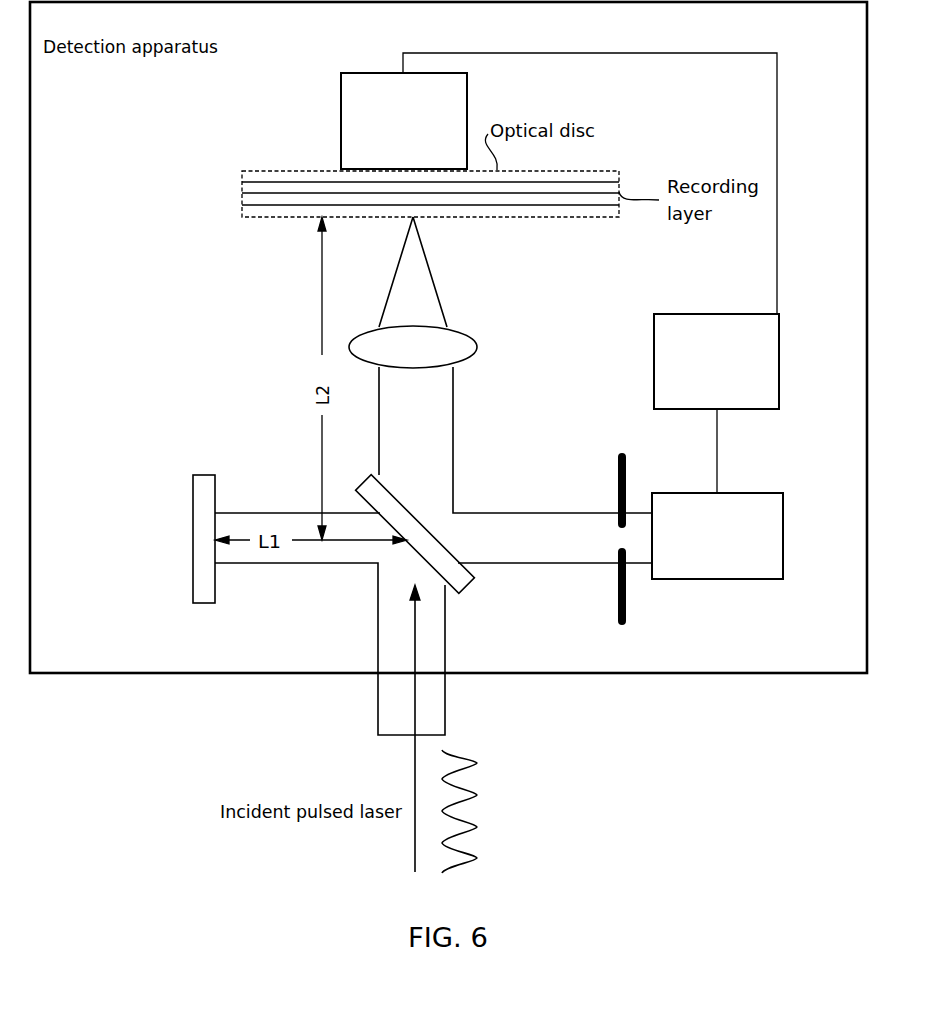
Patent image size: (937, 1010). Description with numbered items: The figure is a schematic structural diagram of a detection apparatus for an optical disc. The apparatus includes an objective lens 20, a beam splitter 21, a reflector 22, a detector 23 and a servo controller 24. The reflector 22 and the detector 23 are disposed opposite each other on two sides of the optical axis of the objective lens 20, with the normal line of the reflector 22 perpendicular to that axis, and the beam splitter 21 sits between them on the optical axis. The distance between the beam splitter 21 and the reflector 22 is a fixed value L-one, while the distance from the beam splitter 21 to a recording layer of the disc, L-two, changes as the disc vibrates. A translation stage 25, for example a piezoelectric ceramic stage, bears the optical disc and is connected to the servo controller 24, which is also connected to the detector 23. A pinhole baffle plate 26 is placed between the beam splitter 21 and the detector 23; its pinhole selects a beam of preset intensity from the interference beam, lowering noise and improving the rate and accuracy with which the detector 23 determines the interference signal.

The objective lens 20 is at (477, 347).
The beam splitter 21 is at (473, 583).
The reflector 22 is at (193, 538).
The detector 23 is at (783, 525).
The servo controller 24 is at (779, 353).
The translation stage 25 is at (341, 107).
The pinhole baffle plate 26 is at (622, 455).